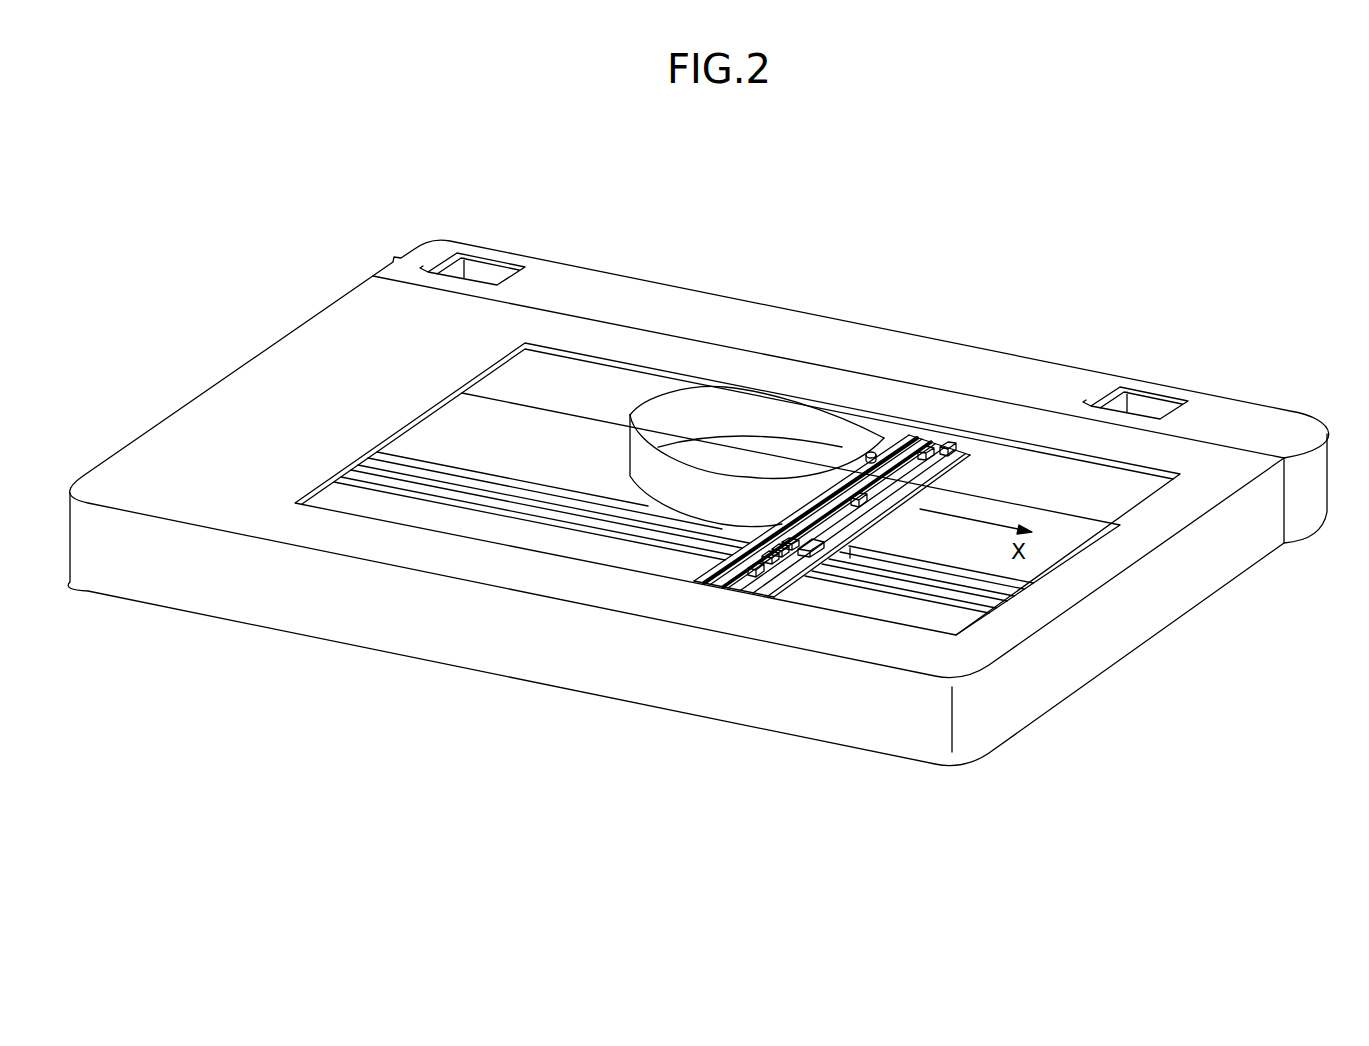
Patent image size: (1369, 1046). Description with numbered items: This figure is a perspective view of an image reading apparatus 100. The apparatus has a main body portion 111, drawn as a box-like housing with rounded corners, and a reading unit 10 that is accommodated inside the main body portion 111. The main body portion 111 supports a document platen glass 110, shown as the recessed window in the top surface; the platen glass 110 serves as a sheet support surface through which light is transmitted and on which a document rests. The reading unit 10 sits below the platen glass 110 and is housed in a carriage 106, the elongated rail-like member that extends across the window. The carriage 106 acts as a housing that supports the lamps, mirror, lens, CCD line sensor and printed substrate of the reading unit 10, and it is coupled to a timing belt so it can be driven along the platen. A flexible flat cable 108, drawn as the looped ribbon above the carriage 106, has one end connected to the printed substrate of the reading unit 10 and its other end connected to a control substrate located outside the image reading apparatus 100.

The image reading apparatus 100 is at (822, 190).
The main body portion 111 is at (1002, 363).
The document platen glass 110 is at (690, 570).
The flexible flat cable 108 is at (823, 422).
The carriage 106 is at (768, 570).
The reading unit 10 is at (725, 598).